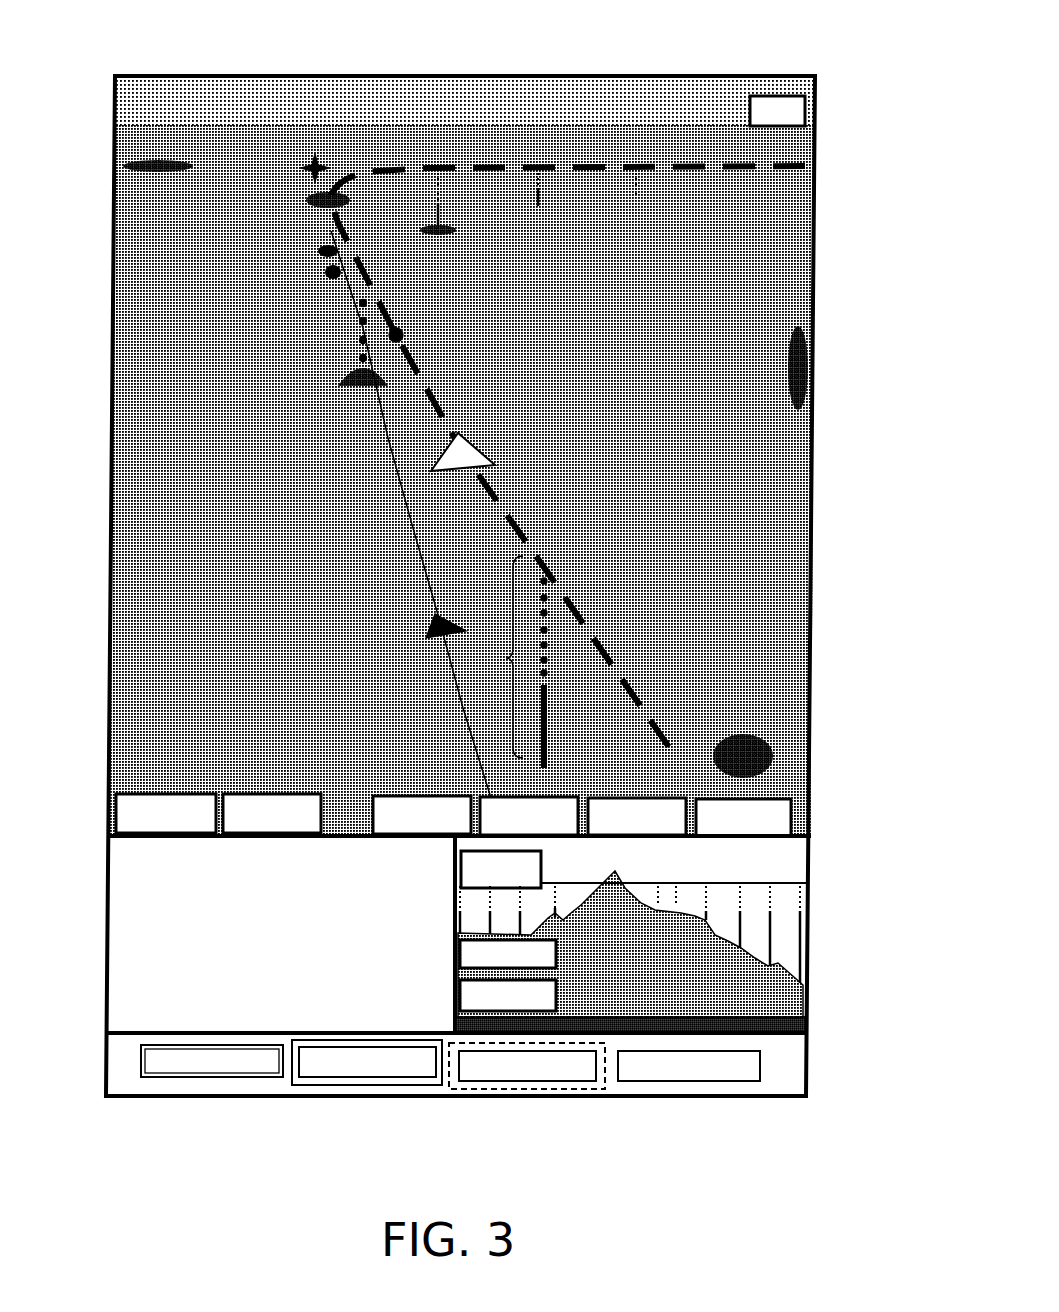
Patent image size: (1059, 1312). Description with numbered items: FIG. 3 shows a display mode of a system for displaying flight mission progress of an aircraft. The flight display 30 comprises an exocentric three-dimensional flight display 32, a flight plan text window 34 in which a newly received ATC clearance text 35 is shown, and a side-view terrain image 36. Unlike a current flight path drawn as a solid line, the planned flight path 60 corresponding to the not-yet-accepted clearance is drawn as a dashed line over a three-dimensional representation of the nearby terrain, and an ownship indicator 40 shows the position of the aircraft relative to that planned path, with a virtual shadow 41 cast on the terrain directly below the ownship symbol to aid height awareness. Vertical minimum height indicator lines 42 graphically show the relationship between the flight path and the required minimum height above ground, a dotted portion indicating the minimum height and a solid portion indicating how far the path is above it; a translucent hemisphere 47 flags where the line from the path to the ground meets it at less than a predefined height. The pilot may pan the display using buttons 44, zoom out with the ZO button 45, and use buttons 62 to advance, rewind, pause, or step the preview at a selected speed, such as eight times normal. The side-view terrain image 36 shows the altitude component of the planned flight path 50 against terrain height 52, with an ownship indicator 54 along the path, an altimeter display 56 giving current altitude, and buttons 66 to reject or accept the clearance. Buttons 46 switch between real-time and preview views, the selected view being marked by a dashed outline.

The flight display 30 is at (460, 553).
The exocentric 3-D flight display 32 is at (462, 438).
The flight plan text window 34 is at (414, 934).
The ATC clearance text 35 is at (267, 993).
The side-view terrain image 36 is at (519, 1056).
The ownship indicator 40 is at (501, 443).
The virtual shadow 41 is at (411, 514).
The vertical minimum height indicator lines 42 is at (507, 662).
The buttons 44 is at (405, 798).
The ZO (zoom out) button 45 is at (820, 91).
The buttons 46 is at (475, 1112).
The translucent hemisphere 47 is at (313, 358).
The altitude component of the planned flight path 50 is at (673, 864).
The terrain height 52 is at (683, 952).
The ownship indicator 54 is at (630, 915).
The altimeter display 56 is at (536, 867).
The planned flight path 60 is at (561, 458).
The buttons 62 is at (748, 726).
The buttons 66 is at (558, 975).